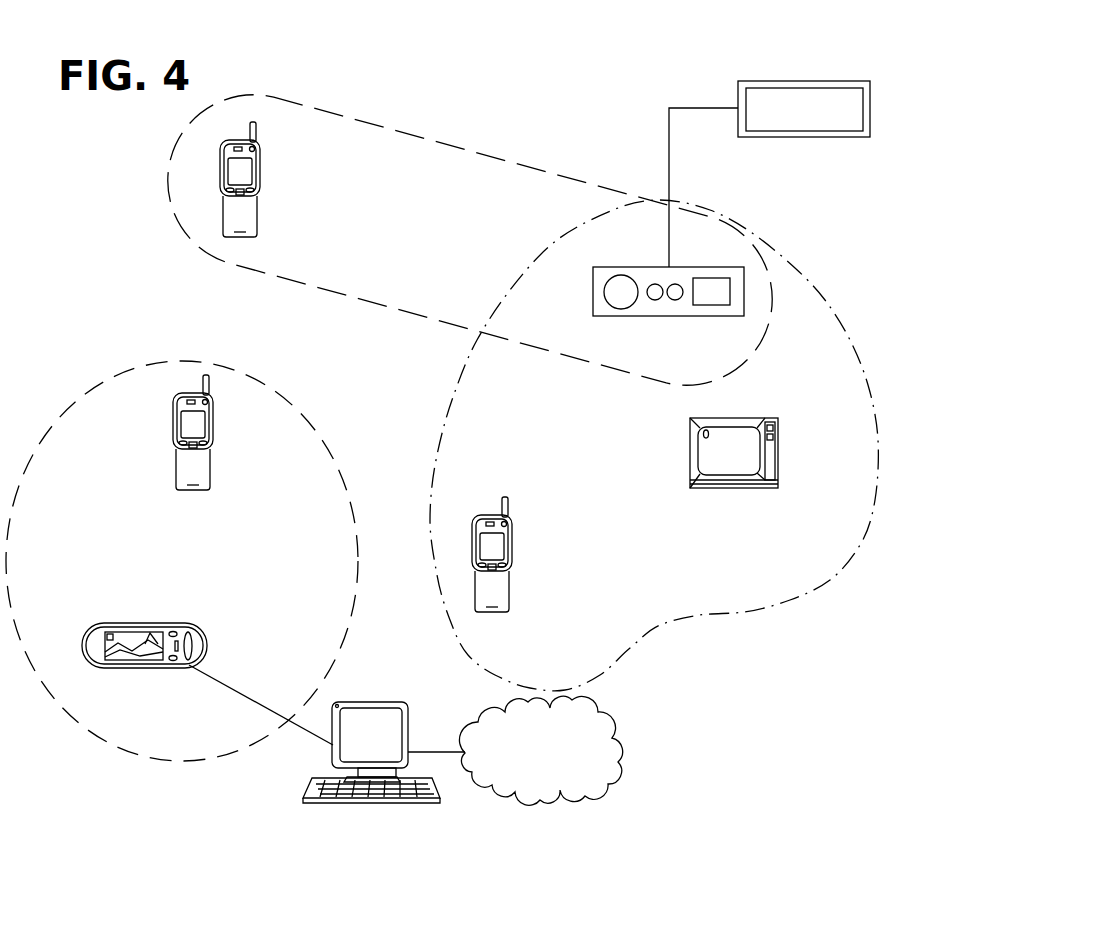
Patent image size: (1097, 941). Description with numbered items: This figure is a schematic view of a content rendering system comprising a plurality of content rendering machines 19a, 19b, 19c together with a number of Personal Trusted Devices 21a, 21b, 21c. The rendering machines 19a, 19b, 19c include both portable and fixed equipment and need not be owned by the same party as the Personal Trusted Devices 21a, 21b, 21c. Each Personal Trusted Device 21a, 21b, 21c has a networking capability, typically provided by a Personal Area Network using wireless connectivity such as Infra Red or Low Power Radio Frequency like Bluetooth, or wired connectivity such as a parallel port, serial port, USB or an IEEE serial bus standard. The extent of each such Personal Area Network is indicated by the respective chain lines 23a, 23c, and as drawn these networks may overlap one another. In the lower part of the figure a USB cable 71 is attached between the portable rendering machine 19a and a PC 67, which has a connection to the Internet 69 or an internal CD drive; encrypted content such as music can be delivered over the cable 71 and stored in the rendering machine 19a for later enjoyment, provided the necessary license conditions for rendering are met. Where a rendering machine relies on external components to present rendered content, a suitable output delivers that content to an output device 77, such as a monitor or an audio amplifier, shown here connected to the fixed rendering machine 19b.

The portable rendering machine 19a is at (207, 648).
The content rendering machine 19b is at (727, 267).
The content rendering machine 19c is at (730, 488).
The Personal Trusted Device 21a is at (260, 208).
The Personal Trusted Device 21b is at (212, 487).
The Personal Trusted Device 21c is at (510, 608).
The chain line 23a is at (480, 152).
The chain line 23c is at (820, 293).
The PC 67 is at (410, 718).
The Internet 69 is at (555, 770).
The USB cable 71 is at (262, 708).
The output device 77 is at (858, 81).